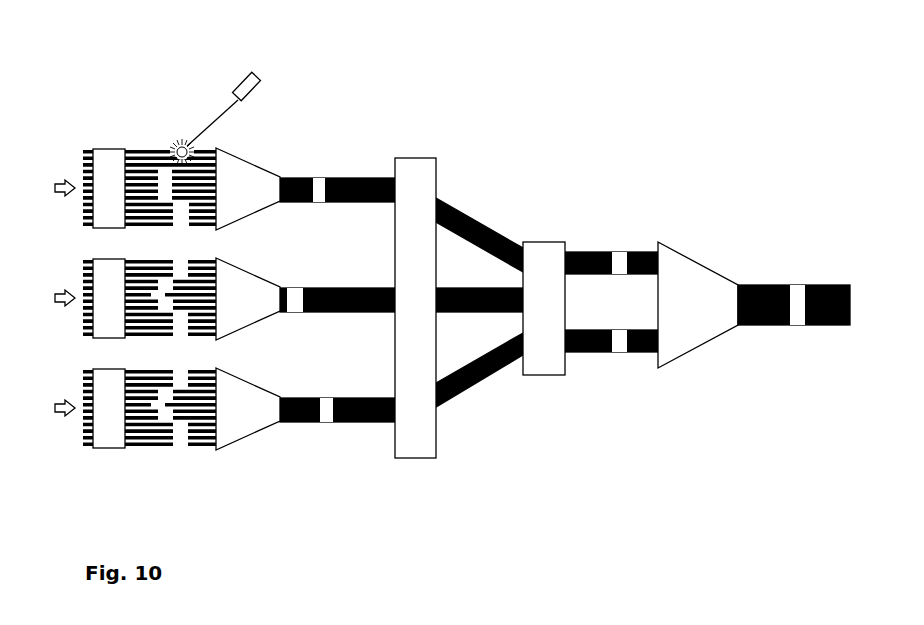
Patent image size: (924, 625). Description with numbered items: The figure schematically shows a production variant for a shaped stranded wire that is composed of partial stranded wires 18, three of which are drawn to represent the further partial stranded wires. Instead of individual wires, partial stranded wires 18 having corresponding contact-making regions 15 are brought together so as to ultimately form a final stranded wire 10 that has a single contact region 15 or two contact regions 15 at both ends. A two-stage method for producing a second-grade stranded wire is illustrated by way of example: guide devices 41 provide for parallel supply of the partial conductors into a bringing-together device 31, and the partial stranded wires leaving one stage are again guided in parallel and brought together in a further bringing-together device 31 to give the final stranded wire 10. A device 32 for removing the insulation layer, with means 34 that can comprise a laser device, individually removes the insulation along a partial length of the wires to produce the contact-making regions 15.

The final stranded wire 10 is at (847, 285).
The contact-making region 15 is at (320, 180).
The partial stranded wire 18 is at (150, 447).
The bringing-together device 31 is at (252, 163).
The device for removing the insulation layer 32 is at (240, 77).
The means for individually removing the insulation layer 34 is at (257, 69).
The guide device 41 is at (418, 158).